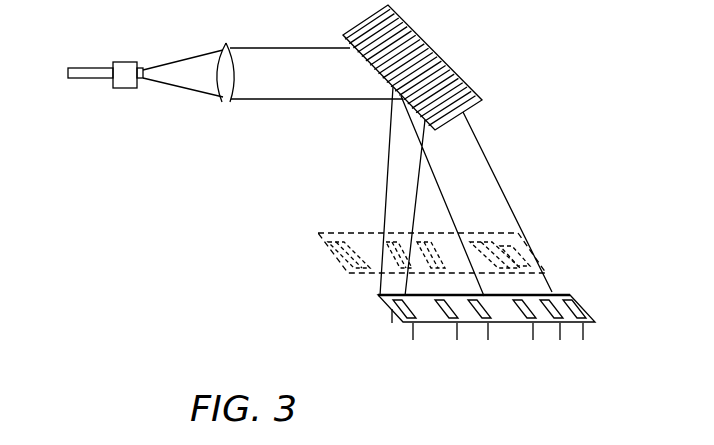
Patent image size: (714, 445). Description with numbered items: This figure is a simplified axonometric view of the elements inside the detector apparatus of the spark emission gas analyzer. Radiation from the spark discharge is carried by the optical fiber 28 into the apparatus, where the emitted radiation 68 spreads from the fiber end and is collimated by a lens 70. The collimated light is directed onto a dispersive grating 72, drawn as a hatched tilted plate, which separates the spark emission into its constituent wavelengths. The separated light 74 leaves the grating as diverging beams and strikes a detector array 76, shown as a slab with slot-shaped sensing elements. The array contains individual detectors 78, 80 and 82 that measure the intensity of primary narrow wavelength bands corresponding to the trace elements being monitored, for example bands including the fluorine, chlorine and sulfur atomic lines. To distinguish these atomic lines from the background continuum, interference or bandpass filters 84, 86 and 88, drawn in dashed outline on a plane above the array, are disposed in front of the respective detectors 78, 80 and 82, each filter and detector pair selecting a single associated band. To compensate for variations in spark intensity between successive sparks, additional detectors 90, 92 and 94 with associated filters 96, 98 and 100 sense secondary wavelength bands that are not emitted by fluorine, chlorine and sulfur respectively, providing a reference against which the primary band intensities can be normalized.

The optical fiber 28 is at (88, 69).
The emitted radiation 68 is at (198, 53).
The lens 70 is at (221, 97).
The dispersive grating 72 is at (438, 53).
The separated light 74 is at (388, 158).
The detector array 76 is at (582, 303).
The detector 78 is at (402, 312).
The detector 80 is at (480, 316).
The detector 82 is at (556, 294).
The bandpass filter 84 is at (326, 249).
The bandpass filter 86 is at (410, 223).
The bandpass filter 88 is at (522, 228).
The additional detector 90 is at (460, 316).
The additional detector 92 is at (542, 316).
The additional detector 94 is at (588, 316).
The filter 96 is at (377, 230).
The filter 98 is at (457, 233).
The filter 100 is at (540, 251).